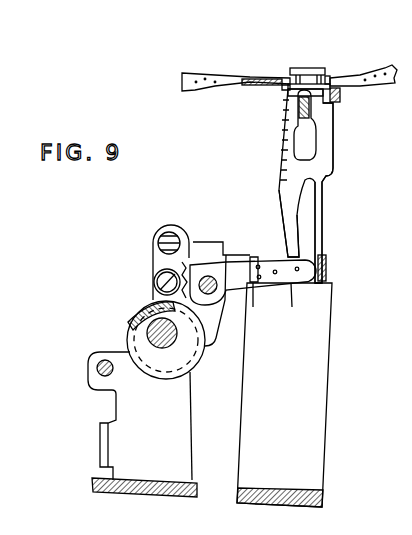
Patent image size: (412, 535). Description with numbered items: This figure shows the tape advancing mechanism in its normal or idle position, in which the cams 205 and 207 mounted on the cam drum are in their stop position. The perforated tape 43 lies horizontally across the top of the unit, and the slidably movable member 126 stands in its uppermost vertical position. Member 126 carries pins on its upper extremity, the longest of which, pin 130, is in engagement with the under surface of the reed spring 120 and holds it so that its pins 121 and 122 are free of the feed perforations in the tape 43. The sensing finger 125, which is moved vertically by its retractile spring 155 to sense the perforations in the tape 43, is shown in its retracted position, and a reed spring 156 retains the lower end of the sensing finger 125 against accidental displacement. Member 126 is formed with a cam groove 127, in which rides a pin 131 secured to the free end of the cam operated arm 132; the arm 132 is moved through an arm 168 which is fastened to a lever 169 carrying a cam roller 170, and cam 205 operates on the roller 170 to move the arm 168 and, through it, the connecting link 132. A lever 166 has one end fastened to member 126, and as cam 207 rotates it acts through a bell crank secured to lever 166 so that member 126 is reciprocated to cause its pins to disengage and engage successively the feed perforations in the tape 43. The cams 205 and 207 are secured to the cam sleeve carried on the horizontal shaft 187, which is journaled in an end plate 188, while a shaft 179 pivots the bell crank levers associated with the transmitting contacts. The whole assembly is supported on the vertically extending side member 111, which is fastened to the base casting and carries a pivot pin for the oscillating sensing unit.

The perforated tape 43 is at (197, 76).
The pin 122 is at (293, 79).
The reed spring 120 is at (306, 69).
The pin 130 is at (318, 77).
The pin 121 is at (327, 82).
The retractile spring 155 is at (255, 85).
The pin 131 is at (303, 109).
The cam groove 127 is at (311, 134).
The slidably movable member 126 is at (292, 144).
The sensing finger 125 is at (327, 155).
The cam operated arm 132 is at (280, 186).
The lever 169 is at (190, 232).
The arm 168 is at (235, 258).
The lever 166 is at (252, 262).
The cam roller 170 is at (154, 282).
The cam 205 is at (140, 310).
The cam 207 is at (128, 342).
The horizontal shaft 187 is at (172, 338).
The reed spring 156 is at (286, 283).
The shaft 179 is at (98, 372).
The end plate 188 is at (113, 459).
The side member 111 is at (314, 459).